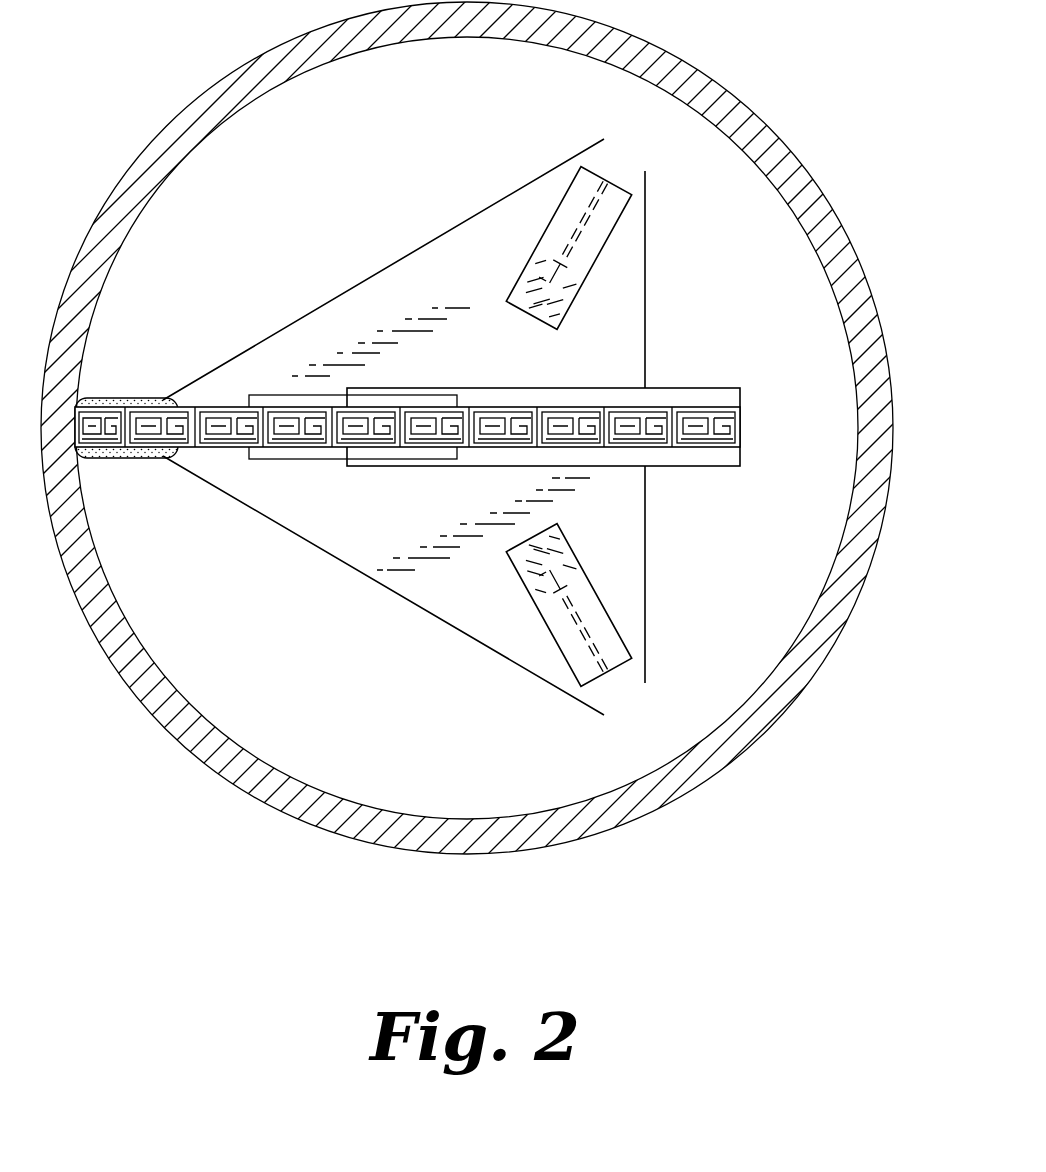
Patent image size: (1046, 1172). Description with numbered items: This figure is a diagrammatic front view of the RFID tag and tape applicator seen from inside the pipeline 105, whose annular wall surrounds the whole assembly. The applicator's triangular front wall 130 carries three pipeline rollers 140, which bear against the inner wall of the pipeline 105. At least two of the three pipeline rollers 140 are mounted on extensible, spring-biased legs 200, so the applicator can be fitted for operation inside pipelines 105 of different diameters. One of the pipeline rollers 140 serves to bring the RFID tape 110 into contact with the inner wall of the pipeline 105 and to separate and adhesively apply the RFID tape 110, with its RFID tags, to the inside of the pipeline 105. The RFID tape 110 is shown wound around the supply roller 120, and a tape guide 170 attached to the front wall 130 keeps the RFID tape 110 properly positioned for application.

The pipeline 105 is at (173, 117).
The RFID tape 110 is at (215, 407).
The supply roller 120 is at (703, 388).
The front wall 130 is at (363, 280).
The pipeline rollers 140 is at (110, 398).
The tape guide 170 is at (276, 460).
The spring-biased legs 200 is at (607, 273).